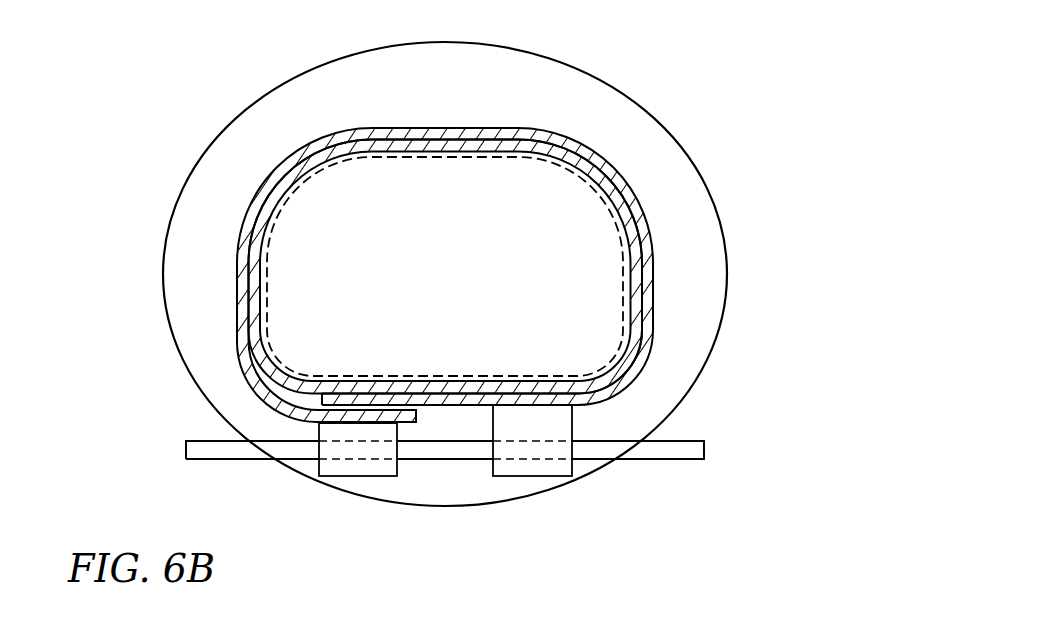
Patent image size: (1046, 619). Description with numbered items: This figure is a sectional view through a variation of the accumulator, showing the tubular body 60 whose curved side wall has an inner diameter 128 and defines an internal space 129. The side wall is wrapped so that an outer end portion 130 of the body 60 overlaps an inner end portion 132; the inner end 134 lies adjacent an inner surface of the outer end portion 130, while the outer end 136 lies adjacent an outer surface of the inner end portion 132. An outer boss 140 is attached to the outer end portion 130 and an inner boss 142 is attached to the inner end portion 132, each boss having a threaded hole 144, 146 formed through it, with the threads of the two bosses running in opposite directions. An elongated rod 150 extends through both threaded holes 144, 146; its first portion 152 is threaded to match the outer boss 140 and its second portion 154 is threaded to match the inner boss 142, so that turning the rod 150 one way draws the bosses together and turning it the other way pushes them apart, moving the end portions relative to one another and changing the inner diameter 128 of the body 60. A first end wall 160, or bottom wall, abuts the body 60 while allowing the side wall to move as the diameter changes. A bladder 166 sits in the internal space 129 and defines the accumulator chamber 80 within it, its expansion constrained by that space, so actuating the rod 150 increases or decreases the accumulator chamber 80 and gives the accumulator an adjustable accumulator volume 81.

The tubular body 60 is at (447, 313).
The accumulator chamber 80 is at (318, 245).
The adjustable accumulator volume 81 is at (613, 222).
The inner diameter 128 is at (617, 280).
The internal space 129 is at (580, 312).
The outer end portion 130 is at (347, 423).
The inner end portion 132 is at (325, 417).
The inner end 134 is at (290, 410).
The outer end 136 is at (417, 417).
The outer boss 140 is at (358, 459).
The inner boss 142 is at (565, 466).
The threaded hole 144 is at (380, 468).
The threaded hole 146 is at (532, 460).
The elongated rod 150 is at (448, 459).
The first portion 152 is at (202, 435).
The second portion 154 is at (622, 437).
The first end wall 160 is at (613, 103).
The bladder 166 is at (323, 400).